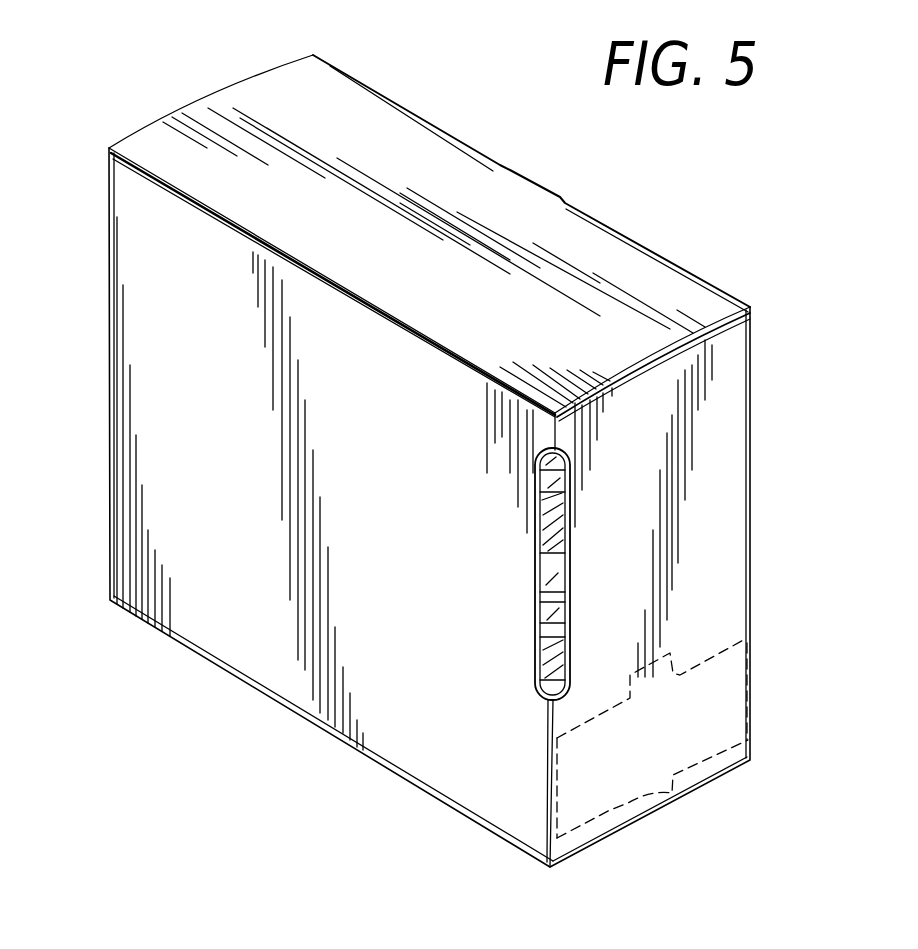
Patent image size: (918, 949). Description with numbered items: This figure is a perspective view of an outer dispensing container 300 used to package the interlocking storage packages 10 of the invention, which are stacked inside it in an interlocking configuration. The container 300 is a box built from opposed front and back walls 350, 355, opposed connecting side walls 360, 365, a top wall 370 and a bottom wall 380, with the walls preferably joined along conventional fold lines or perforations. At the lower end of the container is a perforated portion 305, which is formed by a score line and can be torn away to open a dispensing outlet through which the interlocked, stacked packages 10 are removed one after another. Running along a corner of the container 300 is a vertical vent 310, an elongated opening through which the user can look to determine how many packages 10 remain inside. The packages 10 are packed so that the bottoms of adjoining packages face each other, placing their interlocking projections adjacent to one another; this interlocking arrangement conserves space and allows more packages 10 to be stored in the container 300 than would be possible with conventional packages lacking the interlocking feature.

The outer dispensing container 300 is at (461, 108).
The lower end perforated portion 305 is at (713, 718).
The vertical vent 310 is at (540, 604).
The front wall 350 is at (717, 445).
The back wall 355 is at (97, 217).
The side wall 360 is at (243, 640).
The side wall 365 is at (721, 291).
The top wall 370 is at (353, 135).
The bottom wall 380 is at (422, 802).
The packages 10 is at (540, 662).